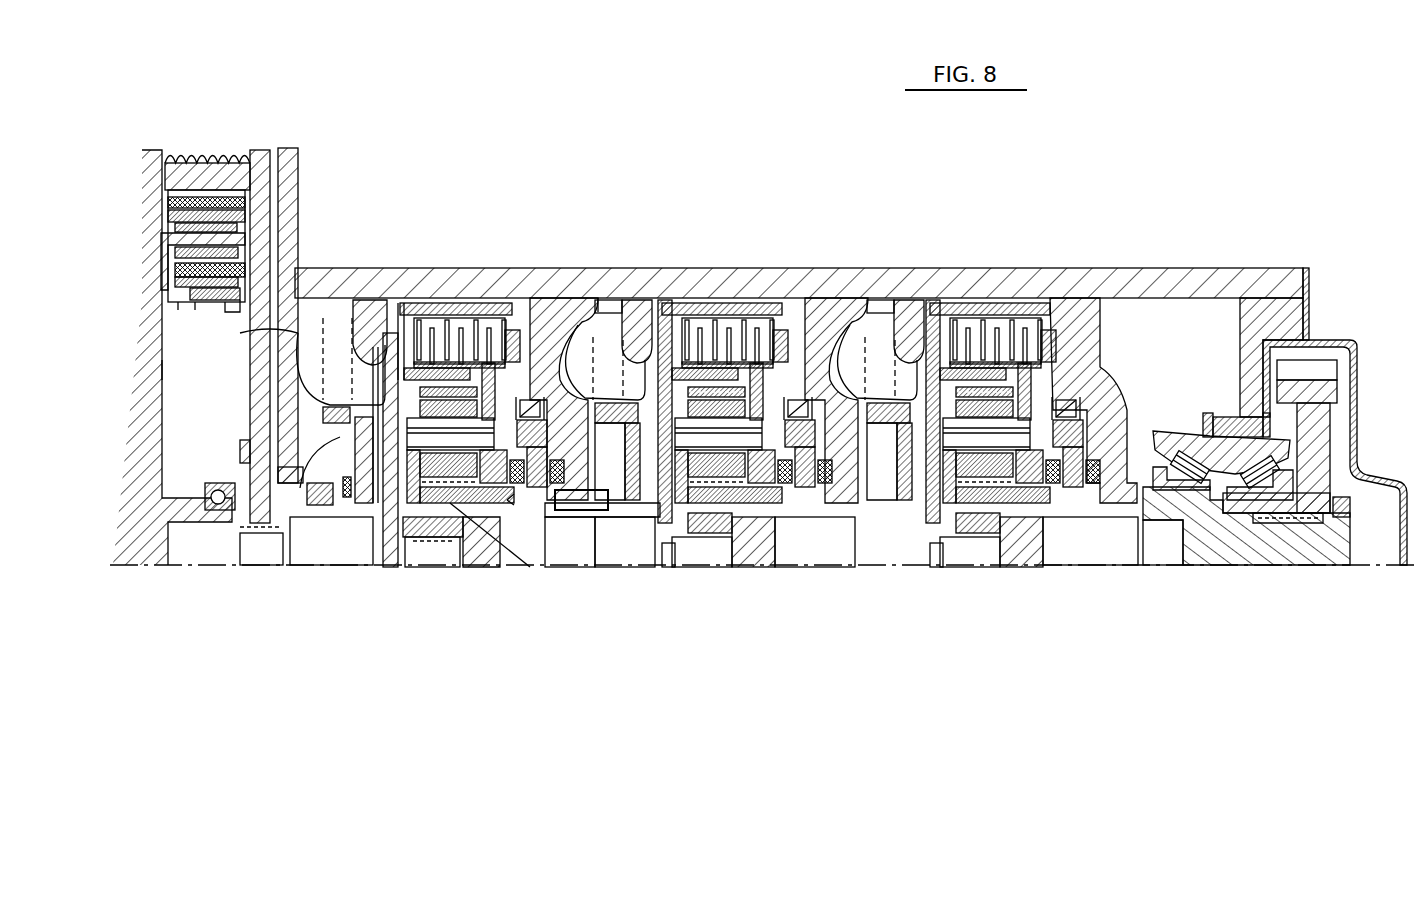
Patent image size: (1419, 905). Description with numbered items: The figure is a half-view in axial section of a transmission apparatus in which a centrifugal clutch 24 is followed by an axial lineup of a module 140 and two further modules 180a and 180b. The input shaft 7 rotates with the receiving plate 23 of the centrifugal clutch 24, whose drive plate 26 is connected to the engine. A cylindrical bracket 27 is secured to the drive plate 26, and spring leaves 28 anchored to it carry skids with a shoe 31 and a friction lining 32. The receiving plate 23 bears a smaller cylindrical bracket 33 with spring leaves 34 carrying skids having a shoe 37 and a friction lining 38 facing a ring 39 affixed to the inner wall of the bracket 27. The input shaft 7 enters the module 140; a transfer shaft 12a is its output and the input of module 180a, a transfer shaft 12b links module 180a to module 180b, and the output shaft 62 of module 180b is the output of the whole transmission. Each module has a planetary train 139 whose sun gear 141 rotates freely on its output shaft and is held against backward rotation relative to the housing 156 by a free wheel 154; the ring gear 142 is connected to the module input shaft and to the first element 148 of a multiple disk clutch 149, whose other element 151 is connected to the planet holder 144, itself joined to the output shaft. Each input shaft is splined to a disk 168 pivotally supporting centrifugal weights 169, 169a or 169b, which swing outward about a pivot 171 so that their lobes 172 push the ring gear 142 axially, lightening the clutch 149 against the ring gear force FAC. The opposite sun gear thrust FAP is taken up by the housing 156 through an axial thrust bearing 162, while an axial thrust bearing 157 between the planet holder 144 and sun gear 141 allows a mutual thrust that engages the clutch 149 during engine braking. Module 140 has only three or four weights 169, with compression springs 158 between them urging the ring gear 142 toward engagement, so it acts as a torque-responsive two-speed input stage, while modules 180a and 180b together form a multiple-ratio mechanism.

The input shaft 7 is at (321, 573).
The transfer shaft 12a is at (583, 545).
The transfer shaft 12b is at (828, 543).
The receiving plate 23 is at (262, 405).
The centrifugal clutch 24 is at (212, 140).
The drive plate 26 is at (162, 372).
The cylindrical bracket 27 is at (237, 248).
The spring leaves 28 is at (215, 240).
The shoe 31 is at (203, 218).
The friction lining 32 is at (180, 205).
The cylindrical bracket 33 is at (231, 312).
The spring leaves 34 is at (206, 300).
The shoe 37 is at (178, 300).
The friction lining 38 is at (242, 262).
The ring 39 is at (282, 265).
The output shaft 62 is at (1085, 545).
The planetary train 139 is at (552, 300).
The module 140 is at (452, 255).
The sun gear 141 is at (450, 503).
The ring gear 142 is at (500, 373).
The planet holder 144 is at (380, 540).
The first element 148 is at (462, 367).
The multiple disk clutch 149 is at (403, 325).
The other element 151 is at (495, 330).
The free wheel 154 is at (538, 520).
The housing 156 is at (335, 290).
The axial thrust bearing 157 is at (532, 505).
The compression springs 158 is at (360, 330).
The axial thrust bearing 162 is at (565, 477).
The disk 168 is at (302, 523).
The centrifugal weights 169 is at (340, 382).
The centrifugal weights 169a is at (615, 300).
The centrifugal weights 169b is at (868, 300).
The pivot 171 is at (240, 333).
The lobes 172 is at (333, 433).
The module 180a is at (709, 255).
The module 180b is at (988, 255).
The axial force of the ring gear FAC is at (372, 540).
The axial thrust of the sun gear FAP is at (507, 500).